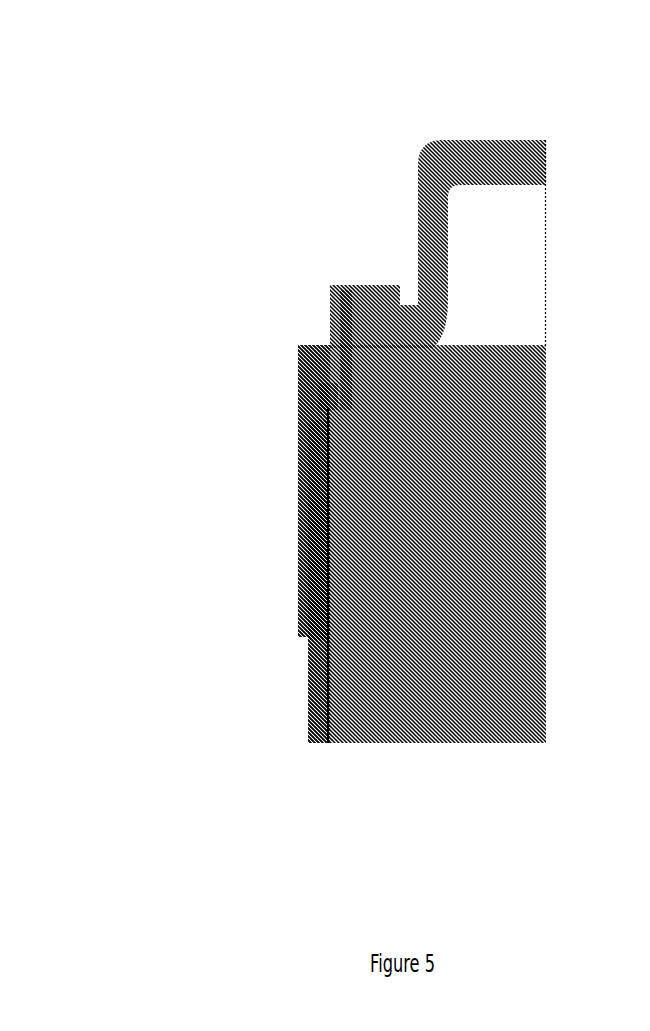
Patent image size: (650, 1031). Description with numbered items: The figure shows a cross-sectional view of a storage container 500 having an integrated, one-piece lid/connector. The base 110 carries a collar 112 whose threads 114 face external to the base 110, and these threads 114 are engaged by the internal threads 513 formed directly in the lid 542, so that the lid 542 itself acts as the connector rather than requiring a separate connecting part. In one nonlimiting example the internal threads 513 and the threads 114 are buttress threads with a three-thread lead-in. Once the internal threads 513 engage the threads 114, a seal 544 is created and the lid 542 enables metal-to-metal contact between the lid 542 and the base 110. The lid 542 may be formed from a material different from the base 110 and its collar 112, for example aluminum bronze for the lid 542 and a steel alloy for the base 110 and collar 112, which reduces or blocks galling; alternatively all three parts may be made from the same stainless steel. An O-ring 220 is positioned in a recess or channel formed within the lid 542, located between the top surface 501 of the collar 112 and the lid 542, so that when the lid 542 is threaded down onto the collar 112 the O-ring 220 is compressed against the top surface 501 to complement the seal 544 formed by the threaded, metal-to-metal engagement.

The storage container 500 is at (60, 19).
The base 110 is at (383, 518).
The collar 112 is at (323, 452).
The threads 114 is at (315, 498).
The O-ring 220 is at (326, 405).
The top surface 501 is at (328, 743).
The internal threads 513 is at (313, 450).
The lid 542 is at (307, 372).
The seal 544 is at (340, 405).